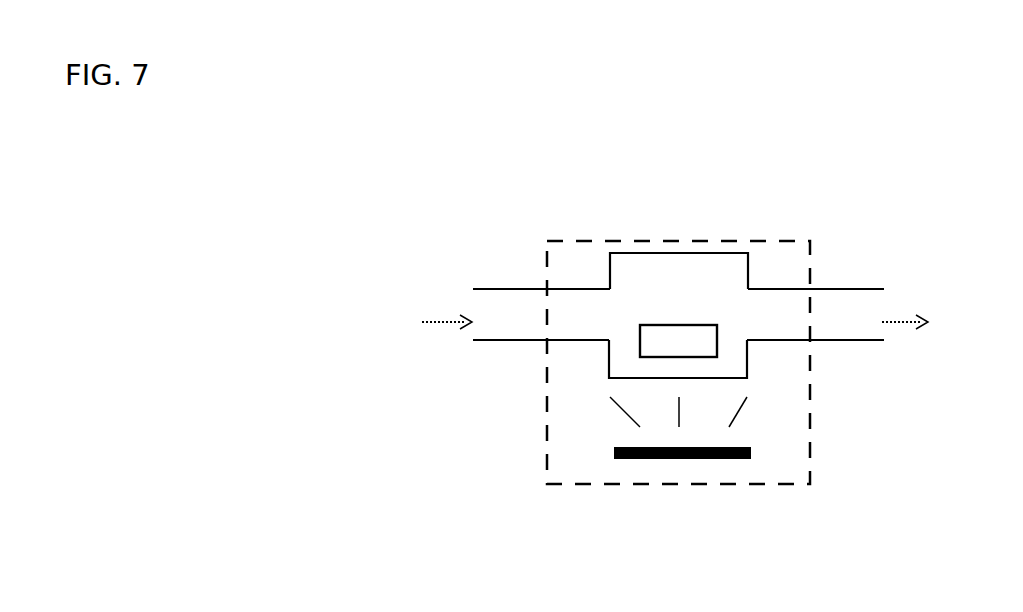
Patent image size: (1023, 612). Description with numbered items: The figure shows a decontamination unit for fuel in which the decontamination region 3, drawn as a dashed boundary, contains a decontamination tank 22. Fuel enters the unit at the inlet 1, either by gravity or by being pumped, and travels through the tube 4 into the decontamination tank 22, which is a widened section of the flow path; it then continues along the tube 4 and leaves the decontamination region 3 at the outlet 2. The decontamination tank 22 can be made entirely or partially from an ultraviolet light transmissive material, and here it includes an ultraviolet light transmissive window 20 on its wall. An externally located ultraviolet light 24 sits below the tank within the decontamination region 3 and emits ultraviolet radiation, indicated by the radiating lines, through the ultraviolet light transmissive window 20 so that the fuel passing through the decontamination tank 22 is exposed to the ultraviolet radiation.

The inlet 1 is at (424, 322).
The outlet 2 is at (927, 322).
The decontamination region 3 is at (692, 241).
The tube 4 is at (527, 342).
The ultraviolet light transmissive window 20 is at (697, 340).
The decontamination tank 22 is at (640, 290).
The ultraviolet light 24 is at (720, 460).